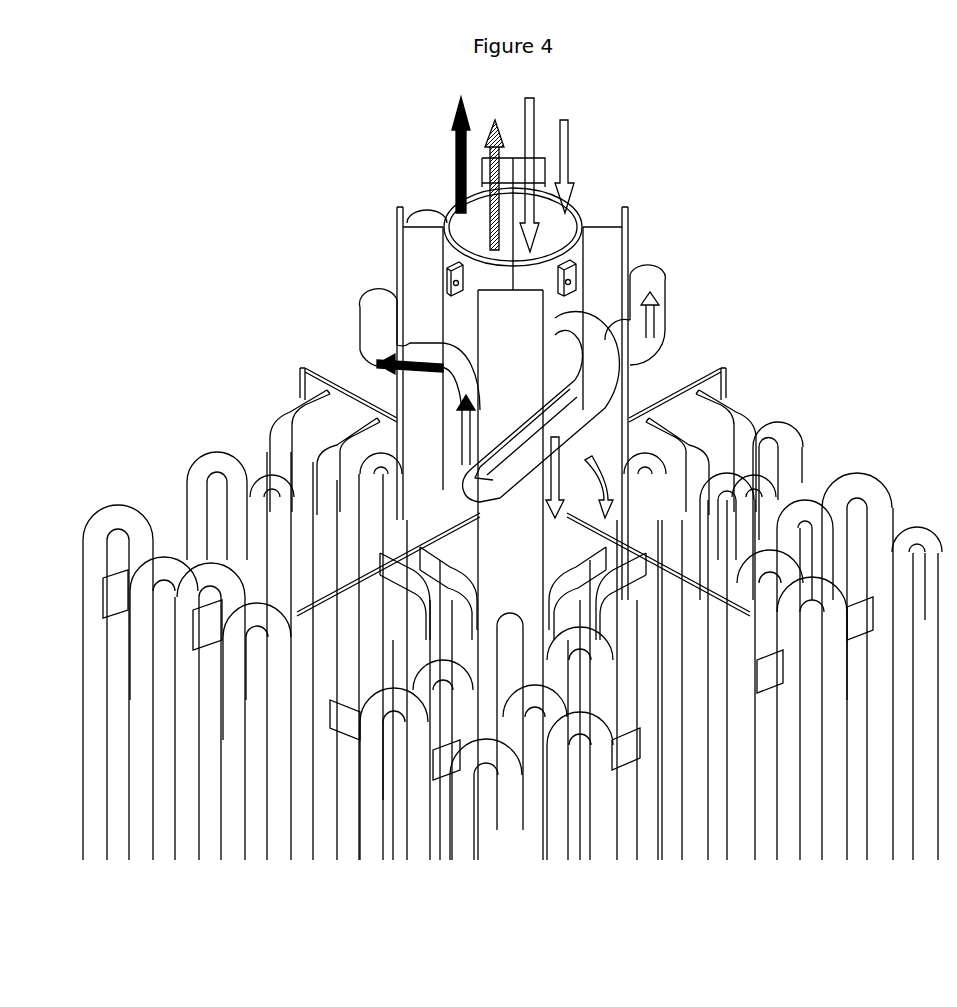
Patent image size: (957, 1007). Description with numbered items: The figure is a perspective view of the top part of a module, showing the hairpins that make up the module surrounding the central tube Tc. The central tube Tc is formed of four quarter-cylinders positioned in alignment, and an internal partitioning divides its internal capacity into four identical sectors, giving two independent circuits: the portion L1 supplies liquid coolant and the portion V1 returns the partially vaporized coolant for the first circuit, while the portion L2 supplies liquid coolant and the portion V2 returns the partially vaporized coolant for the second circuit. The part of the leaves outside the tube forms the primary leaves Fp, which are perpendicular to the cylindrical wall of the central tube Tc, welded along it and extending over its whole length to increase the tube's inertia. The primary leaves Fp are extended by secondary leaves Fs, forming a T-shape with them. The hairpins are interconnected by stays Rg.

The return portion of the first circuit V1 is at (461, 143).
The return portion of the second circuit V2 is at (495, 173).
The supply portion of the first circuit L1 is at (530, 162).
The supply portion of the second circuit L2 is at (564, 154).
The primary leaves Fp is at (423, 252).
The secondary leaves Fs is at (393, 270).
The central tube Tc is at (555, 303).
The stays Rg is at (203, 633).